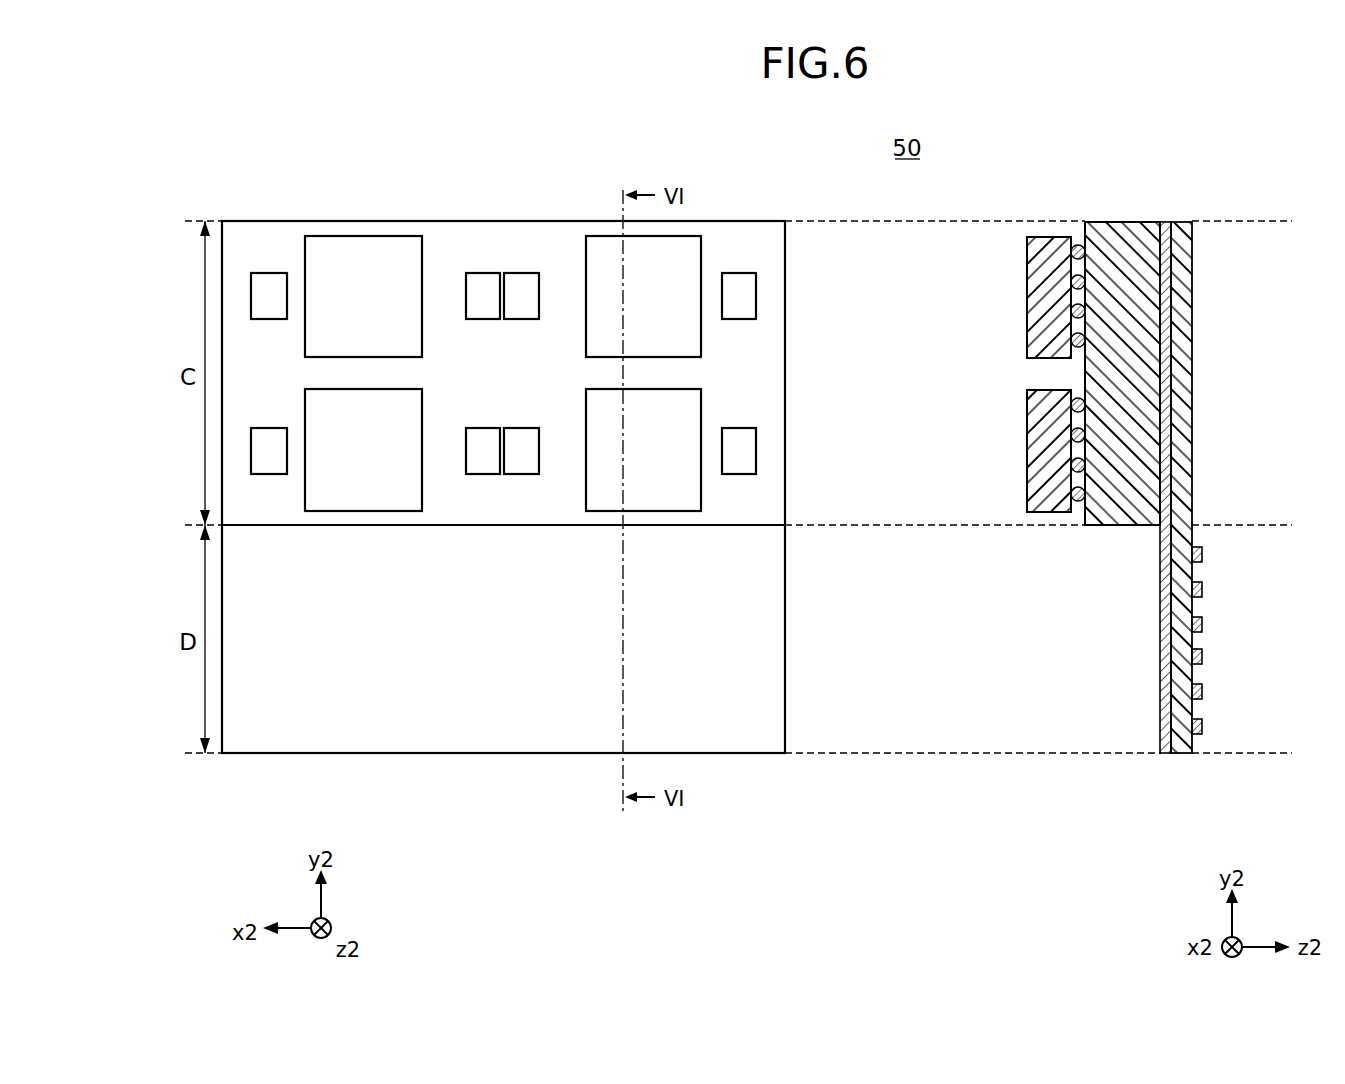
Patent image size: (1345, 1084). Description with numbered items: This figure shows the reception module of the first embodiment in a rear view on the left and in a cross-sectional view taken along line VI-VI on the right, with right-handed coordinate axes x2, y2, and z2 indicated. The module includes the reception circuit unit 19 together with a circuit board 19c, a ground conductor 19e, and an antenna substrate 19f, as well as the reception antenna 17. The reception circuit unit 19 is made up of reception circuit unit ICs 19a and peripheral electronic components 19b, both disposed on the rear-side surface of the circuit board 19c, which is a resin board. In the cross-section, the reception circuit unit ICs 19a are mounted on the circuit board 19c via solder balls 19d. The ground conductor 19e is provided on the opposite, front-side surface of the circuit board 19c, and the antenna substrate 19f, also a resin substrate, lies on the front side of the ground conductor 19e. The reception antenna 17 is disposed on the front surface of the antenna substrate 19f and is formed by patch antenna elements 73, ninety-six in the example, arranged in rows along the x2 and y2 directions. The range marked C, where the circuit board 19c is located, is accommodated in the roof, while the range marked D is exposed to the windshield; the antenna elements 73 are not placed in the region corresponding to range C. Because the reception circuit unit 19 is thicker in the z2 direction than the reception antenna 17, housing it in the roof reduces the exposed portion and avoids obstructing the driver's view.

The reception circuit unit 19 is at (239, 536).
The reception circuit unit IC 19a is at (365, 253).
The peripheral electronic component 19b is at (268, 287).
The circuit board 19c is at (770, 240).
The solder ball 19d is at (1078, 245).
The ground conductor 19e is at (1165, 222).
The antenna substrate 19f is at (1180, 232).
The antenna element 73 is at (1196, 546).
The reception antenna 17 is at (1210, 545).